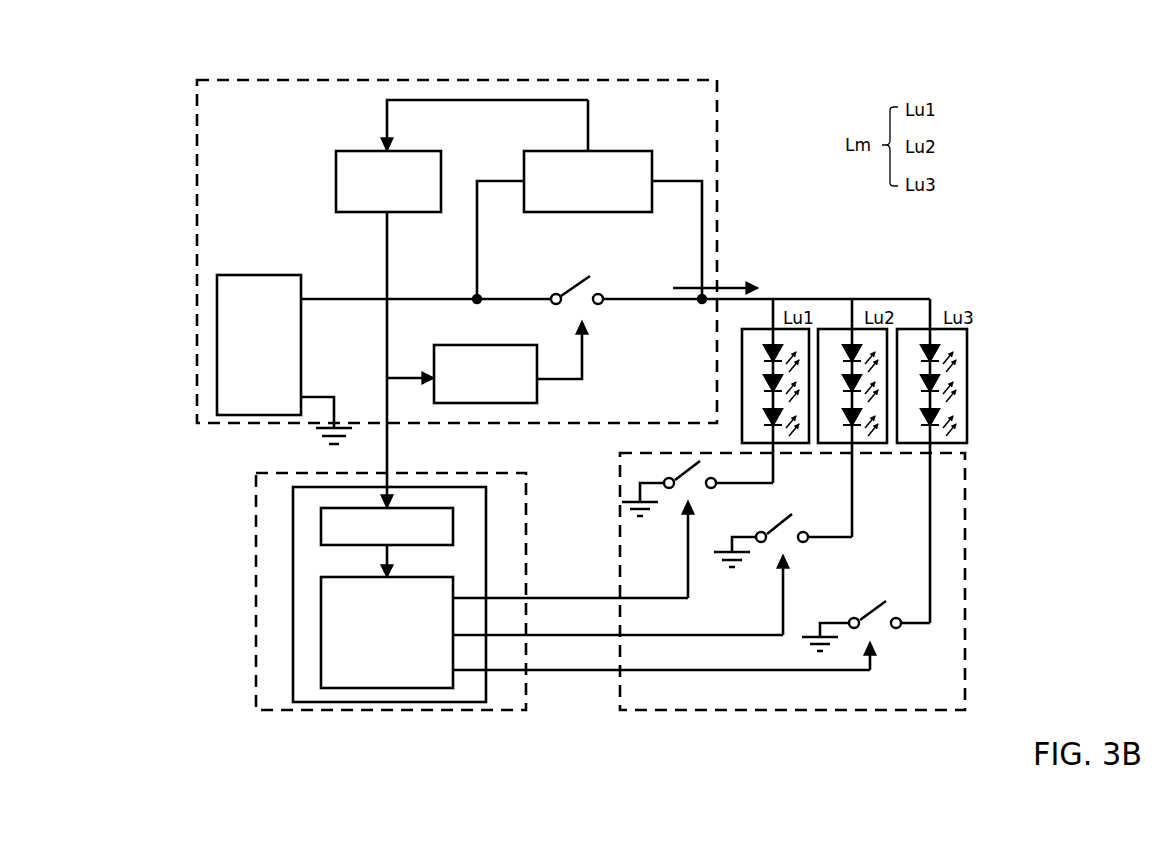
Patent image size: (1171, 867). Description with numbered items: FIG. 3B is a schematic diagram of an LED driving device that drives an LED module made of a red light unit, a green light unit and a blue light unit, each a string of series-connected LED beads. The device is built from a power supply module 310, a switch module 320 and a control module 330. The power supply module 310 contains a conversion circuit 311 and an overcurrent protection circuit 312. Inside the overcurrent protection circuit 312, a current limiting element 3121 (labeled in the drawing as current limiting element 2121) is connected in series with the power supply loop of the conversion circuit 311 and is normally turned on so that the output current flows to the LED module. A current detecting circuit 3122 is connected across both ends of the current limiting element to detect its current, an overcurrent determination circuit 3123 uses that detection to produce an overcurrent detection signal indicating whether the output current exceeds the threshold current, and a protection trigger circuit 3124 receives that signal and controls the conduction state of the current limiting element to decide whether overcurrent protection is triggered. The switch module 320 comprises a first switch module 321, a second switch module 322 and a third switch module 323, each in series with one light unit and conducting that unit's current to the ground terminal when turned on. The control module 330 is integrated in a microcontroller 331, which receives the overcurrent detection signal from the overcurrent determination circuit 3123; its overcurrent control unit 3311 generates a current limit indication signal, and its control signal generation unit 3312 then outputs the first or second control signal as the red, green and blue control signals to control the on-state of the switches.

The power supply module 310 is at (480, 80).
The conversion circuit 311 is at (247, 357).
The overcurrent protection circuit 312 is at (778, 201).
The current limiting element 3121 is at (688, 194).
The current limiting element 2121 is at (603, 292).
The current detecting circuit 3122 is at (568, 192).
The overcurrent determination circuit 3123 is at (368, 192).
The protection trigger circuit 3124 is at (466, 389).
The switch module 320 is at (889, 712).
The first switch module 321 is at (713, 489).
The second switch module 322 is at (805, 544).
The third switch module 323 is at (898, 630).
The control module 330 is at (393, 712).
The microcontroller 331 is at (486, 530).
The overcurrent control unit 3311 is at (367, 537).
The control signal generation unit 3312 is at (367, 641).